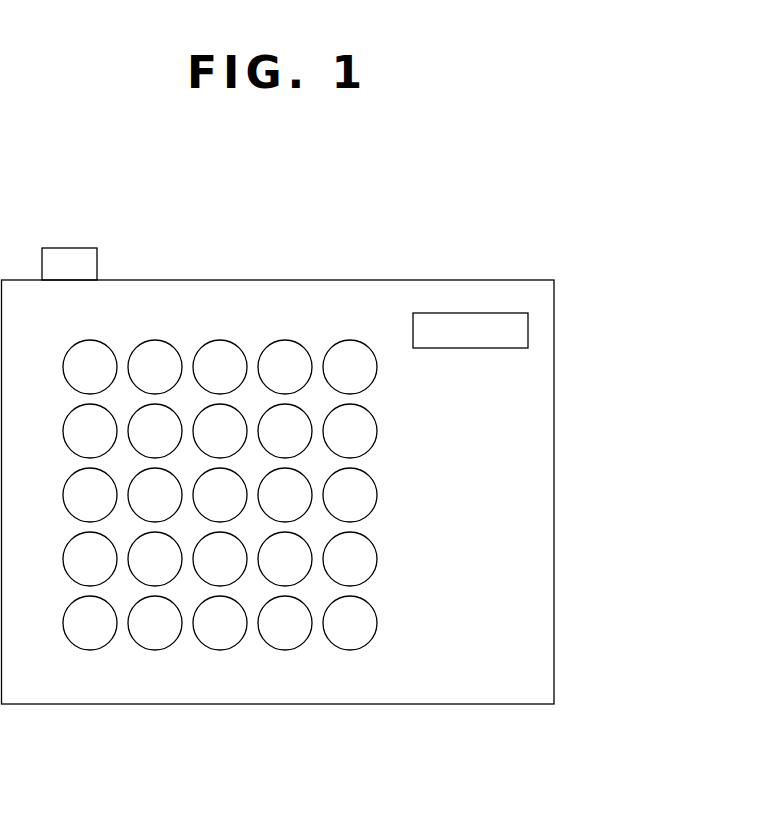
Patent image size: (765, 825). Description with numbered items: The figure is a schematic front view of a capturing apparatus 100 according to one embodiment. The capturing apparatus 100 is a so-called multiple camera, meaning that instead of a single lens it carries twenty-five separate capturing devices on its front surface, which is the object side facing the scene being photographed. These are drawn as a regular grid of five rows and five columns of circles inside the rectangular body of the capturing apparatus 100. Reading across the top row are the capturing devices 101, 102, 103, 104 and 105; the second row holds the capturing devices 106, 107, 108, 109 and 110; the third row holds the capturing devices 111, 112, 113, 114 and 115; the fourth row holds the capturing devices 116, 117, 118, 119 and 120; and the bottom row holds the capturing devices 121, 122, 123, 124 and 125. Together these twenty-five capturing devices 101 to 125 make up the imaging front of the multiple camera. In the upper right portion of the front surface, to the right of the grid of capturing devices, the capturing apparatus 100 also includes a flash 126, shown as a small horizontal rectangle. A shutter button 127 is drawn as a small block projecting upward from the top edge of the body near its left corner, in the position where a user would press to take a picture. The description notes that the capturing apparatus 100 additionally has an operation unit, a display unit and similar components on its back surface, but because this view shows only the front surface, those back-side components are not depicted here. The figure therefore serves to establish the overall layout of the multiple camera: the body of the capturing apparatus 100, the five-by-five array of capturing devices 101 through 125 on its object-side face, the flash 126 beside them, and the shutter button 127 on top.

The capturing apparatus 100 is at (655, 450).
The capturing device 101 is at (90, 367).
The capturing device 102 is at (155, 367).
The capturing device 103 is at (220, 367).
The capturing device 104 is at (285, 367).
The capturing device 105 is at (350, 367).
The capturing device 106 is at (90, 431).
The capturing device 107 is at (155, 431).
The capturing device 108 is at (220, 431).
The capturing device 109 is at (285, 431).
The capturing device 110 is at (350, 431).
The capturing device 111 is at (90, 495).
The capturing device 112 is at (155, 495).
The capturing device 113 is at (220, 495).
The capturing device 114 is at (285, 495).
The capturing device 115 is at (350, 495).
The capturing device 116 is at (90, 559).
The capturing device 117 is at (155, 559).
The capturing device 118 is at (220, 559).
The capturing device 119 is at (285, 559).
The capturing device 120 is at (350, 559).
The capturing device 121 is at (90, 623).
The capturing device 122 is at (155, 623).
The capturing device 123 is at (220, 623).
The capturing device 124 is at (285, 623).
The capturing device 125 is at (350, 623).
The flash 126 is at (528, 328).
The shutter button 127 is at (70, 248).